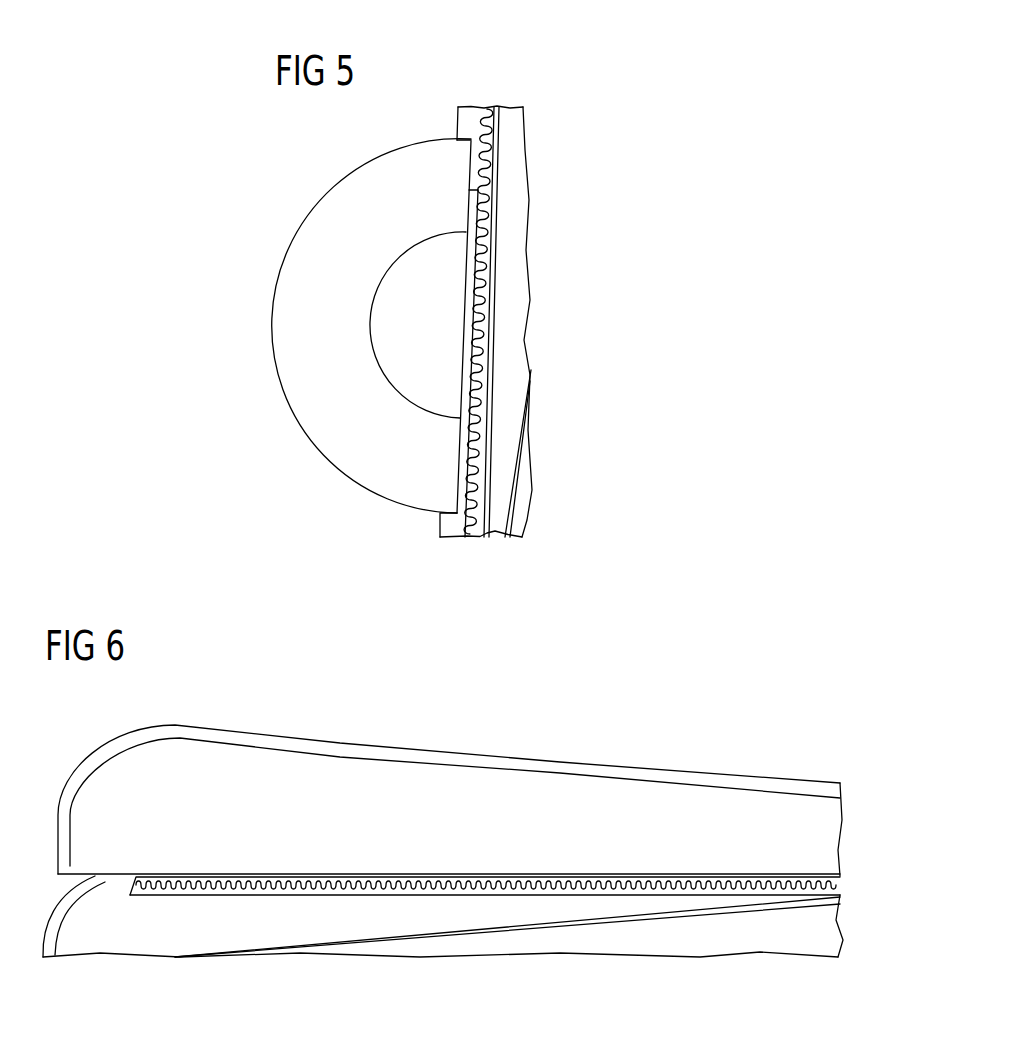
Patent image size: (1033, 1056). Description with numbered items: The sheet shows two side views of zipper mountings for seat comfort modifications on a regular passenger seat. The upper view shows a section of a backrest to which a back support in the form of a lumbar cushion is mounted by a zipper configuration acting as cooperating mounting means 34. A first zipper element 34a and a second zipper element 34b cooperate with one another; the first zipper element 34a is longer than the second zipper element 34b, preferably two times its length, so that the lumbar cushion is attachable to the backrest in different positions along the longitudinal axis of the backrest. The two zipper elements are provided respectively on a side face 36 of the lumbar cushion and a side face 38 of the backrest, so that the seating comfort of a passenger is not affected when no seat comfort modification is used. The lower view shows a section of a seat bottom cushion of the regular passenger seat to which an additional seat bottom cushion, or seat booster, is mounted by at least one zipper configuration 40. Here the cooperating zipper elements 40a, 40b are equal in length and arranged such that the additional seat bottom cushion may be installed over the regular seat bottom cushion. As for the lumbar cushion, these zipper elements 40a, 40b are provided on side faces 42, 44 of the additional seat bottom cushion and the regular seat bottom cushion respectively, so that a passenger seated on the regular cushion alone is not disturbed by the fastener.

In FIG. 5, the cooperating mounting means 34 is at (492, 322).
In FIG. 5, the first zipper element 34a is at (466, 301).
In FIG. 5, the second zipper element 34b is at (478, 469).
In FIG. 5, the side face of the lumbar cushion 36 is at (450, 485).
In FIG. 5, the side face of the backrest 38 is at (524, 190).
In FIG. 6, the zipper configuration 40 is at (485, 917).
In FIG. 6, the zipper element 40a is at (270, 880).
In FIG. 6, the zipper element 40b is at (182, 897).
In FIG. 6, the side face of the additional seat bottom cushion 42 is at (181, 870).
In FIG. 6, the side face of the regular seat bottom cushion 44 is at (297, 928).